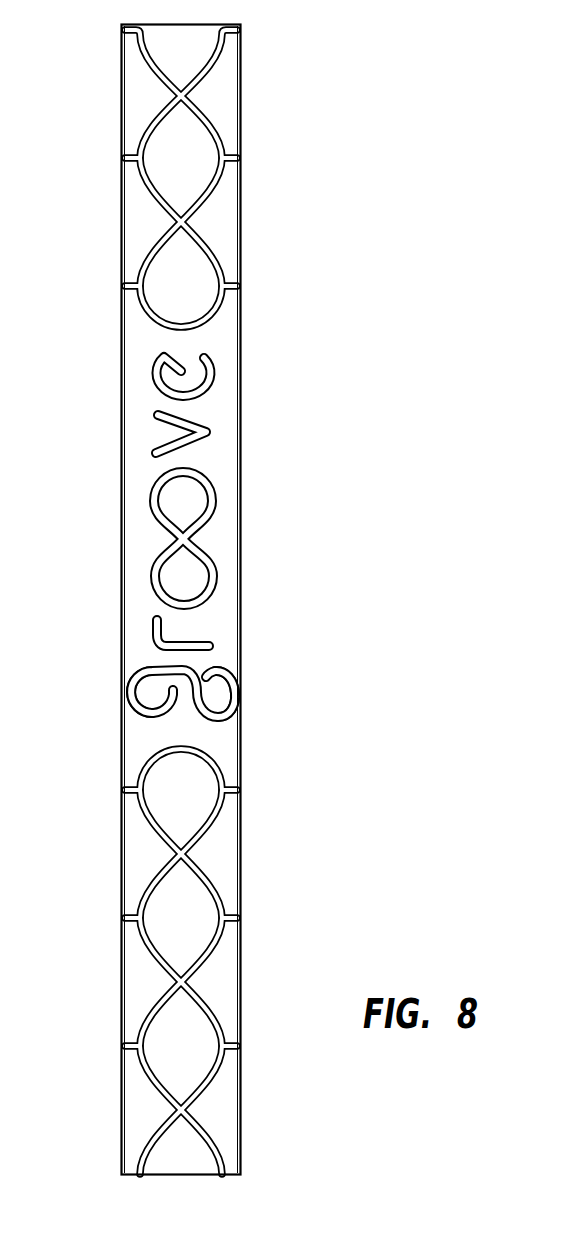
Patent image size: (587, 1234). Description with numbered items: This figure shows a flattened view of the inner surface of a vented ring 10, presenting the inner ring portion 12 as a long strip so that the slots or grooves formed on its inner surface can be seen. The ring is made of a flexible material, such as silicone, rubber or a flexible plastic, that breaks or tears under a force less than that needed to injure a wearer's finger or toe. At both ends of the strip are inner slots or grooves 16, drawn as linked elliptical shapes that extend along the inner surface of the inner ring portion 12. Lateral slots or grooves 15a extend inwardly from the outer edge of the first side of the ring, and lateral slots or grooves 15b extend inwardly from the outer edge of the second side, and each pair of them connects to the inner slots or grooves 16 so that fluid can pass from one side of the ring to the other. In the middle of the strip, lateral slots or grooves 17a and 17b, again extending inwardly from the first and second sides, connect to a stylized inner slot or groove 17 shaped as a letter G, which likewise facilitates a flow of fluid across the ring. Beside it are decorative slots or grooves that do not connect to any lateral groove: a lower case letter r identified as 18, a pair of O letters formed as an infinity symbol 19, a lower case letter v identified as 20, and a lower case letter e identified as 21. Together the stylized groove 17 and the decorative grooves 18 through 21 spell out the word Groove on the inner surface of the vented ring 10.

The vented ring 10 is at (251, 600).
The inner ring portion 12 is at (228, 540).
The lateral slots or grooves 15a is at (124, 158).
The lateral slots or grooves 15b is at (238, 158).
The inner slots or grooves 16 is at (152, 66).
The stylized inner slot or groove 17 is at (226, 680).
The lateral slots or grooves 17a is at (120, 693).
The lateral slots or grooves 17b is at (242, 693).
The decorative slot or groove 18 is at (157, 628).
The decorative slot or groove 19 is at (216, 490).
The decorative slot or groove 20 is at (216, 430).
The decorative slot or groove 21 is at (218, 367).